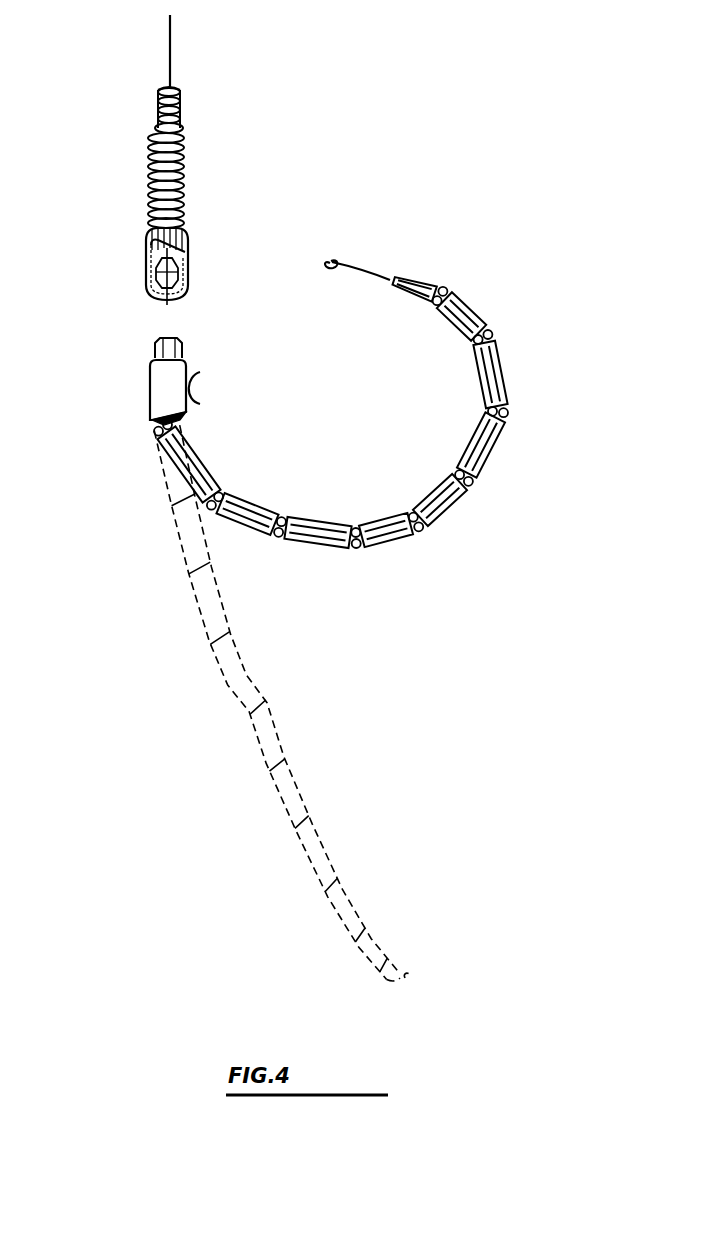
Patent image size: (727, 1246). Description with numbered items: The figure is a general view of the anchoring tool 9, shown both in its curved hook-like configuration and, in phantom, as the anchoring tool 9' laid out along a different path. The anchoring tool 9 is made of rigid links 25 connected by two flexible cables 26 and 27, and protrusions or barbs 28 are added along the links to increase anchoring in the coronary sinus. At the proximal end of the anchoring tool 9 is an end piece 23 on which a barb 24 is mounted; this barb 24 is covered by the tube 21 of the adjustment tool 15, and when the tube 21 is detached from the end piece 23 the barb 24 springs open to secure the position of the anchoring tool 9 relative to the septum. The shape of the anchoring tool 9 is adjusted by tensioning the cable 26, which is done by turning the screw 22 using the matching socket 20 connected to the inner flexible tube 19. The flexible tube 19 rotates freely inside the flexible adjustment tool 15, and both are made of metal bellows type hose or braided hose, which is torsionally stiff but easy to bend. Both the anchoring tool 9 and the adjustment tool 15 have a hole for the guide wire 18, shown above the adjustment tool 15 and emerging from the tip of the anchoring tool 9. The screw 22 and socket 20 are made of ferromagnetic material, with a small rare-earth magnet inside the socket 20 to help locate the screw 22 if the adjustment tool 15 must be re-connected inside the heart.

The guide wire 18 is at (172, 48).
The inner flexible tube 19 is at (182, 108).
The adjustment tool 15 is at (185, 168).
The socket 20 is at (150, 260).
The tube 21 is at (188, 278).
The screw 22 is at (155, 352).
The end piece 23 is at (150, 400).
The barb 24 is at (203, 388).
The rigid links 25 is at (318, 516).
The flexible cable 26 is at (356, 526).
The flexible cable 27 is at (352, 548).
The barbs 28 is at (472, 384).
The anchoring tool 9 is at (362, 438).
The anchoring tool in straightened configuration 9' is at (279, 703).